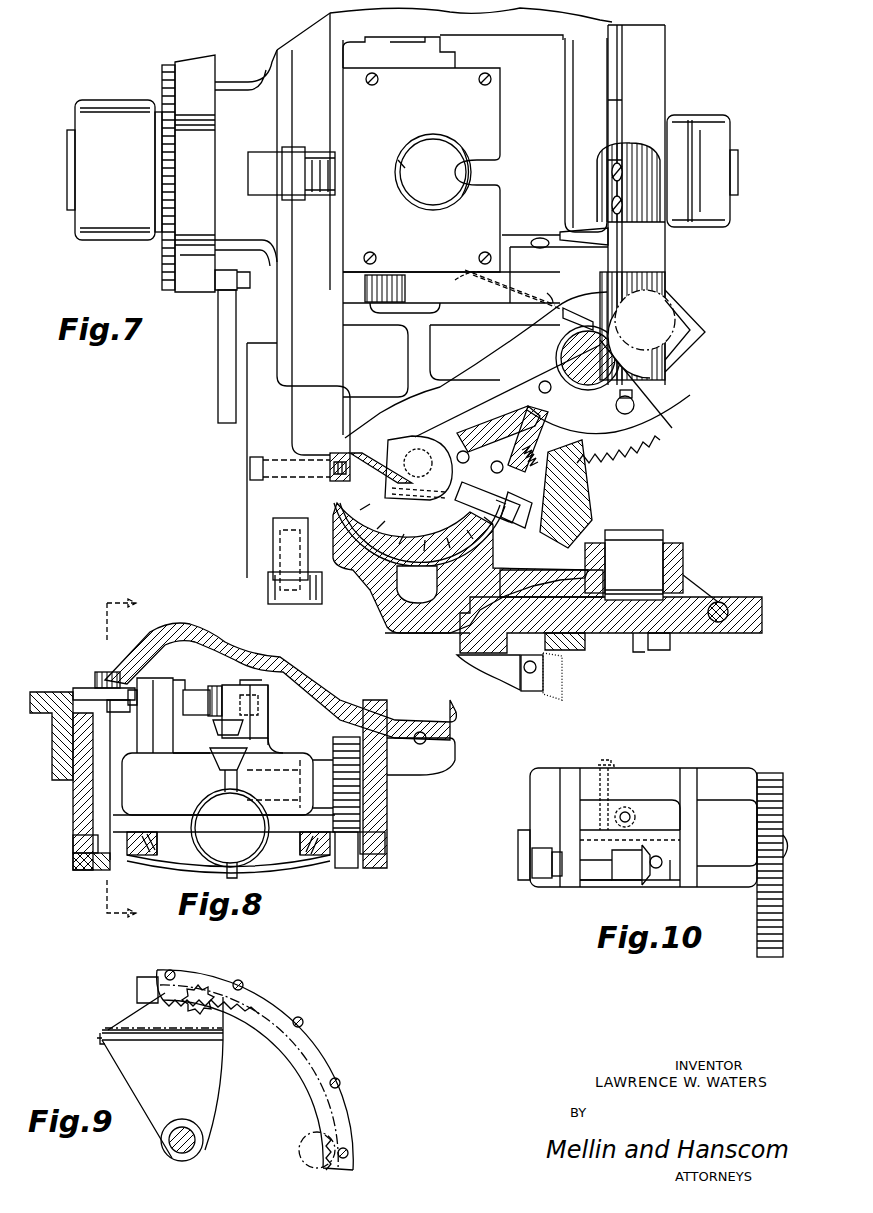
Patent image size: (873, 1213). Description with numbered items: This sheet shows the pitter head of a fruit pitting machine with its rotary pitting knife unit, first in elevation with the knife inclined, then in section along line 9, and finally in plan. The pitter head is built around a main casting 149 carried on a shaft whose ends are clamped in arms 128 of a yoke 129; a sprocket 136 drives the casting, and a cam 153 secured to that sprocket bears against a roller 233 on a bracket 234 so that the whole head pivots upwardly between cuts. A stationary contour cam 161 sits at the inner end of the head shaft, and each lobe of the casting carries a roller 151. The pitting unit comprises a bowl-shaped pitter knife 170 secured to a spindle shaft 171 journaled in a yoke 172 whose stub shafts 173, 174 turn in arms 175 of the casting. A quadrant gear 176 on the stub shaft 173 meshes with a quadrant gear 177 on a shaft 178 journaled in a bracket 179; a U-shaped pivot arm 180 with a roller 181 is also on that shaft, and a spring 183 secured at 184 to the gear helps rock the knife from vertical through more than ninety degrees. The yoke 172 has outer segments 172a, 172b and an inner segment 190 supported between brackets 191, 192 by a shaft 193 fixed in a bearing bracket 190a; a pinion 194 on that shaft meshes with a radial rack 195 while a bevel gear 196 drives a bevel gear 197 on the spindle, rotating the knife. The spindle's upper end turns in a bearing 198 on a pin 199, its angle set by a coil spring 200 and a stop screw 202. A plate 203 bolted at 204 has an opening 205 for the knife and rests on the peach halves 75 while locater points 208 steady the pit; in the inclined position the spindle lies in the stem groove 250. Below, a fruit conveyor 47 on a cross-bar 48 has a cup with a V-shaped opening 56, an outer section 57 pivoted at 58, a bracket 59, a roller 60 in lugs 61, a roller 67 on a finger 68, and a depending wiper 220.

In FIG. 7, the yoke 129 is at (115, 98).
In FIG. 7, the sprocket 136 is at (162, 262).
In FIG. 7, the cam 153 is at (208, 63).
In FIG. 7, the roller 151 is at (292, 148).
In FIG. 7, the roller 233 is at (205, 305).
In FIG. 7, the bracket 234 is at (220, 372).
In FIG. 7, the plate 203 is at (463, 75).
In FIG. 8, the plate 203 is at (290, 878).
In FIG. 7, the bolts 204 is at (372, 86).
In FIG. 8, the bolts 204 is at (152, 858).
In FIG. 7, the opening 205 is at (397, 168).
In FIG. 8, the opening 205 is at (200, 870).
In FIG. 7, the rotary pitter knife 170 is at (400, 180).
In FIG. 8, the rotary pitter knife 170 is at (212, 810).
In FIG. 7, the shaft 178 is at (566, 88).
In FIG. 7, the bracket 179 is at (612, 24).
In FIG. 7, the stationary contour cam 161 is at (660, 68).
In FIG. 7, the roller 181 is at (640, 148).
In FIG. 7, the U-shaped pivot arm 180 is at (630, 218).
In FIG. 7, the arms 128 is at (735, 102).
In FIG. 7, the spring 183 is at (550, 232).
In FIG. 7, the quadrant gear 176 is at (486, 304).
In FIG. 8, the quadrant gear 176 is at (362, 790).
In FIG. 10, the quadrant gear 176 is at (785, 762).
In FIG. 7, the quadrant gear 177 is at (533, 302).
In FIG. 7, the spring attachment point 184 is at (636, 400).
In FIG. 7, the yoke 172 is at (485, 428).
In FIG. 8, the yoke 172 is at (283, 740).
In FIG. 10, the yoke 172 is at (697, 768).
In FIG. 9, the yoke 172 is at (108, 1066).
In FIG. 7, the spindle shaft 171 is at (470, 475).
In FIG. 8, the spindle shaft 171 is at (222, 778).
In FIG. 10, the spindle shaft 171 is at (656, 870).
In FIG. 7, the coil spring 200 is at (540, 455).
In FIG. 10, the coil spring 200 is at (627, 805).
In FIG. 7, the inner segment 190 is at (575, 505).
In FIG. 8, the inner segment 190 is at (250, 684).
In FIG. 10, the inner segment 190 is at (645, 795).
In FIG. 9, the inner segment 190 is at (132, 986).
In FIG. 7, the bevel gear 197 is at (518, 528).
In FIG. 8, the bevel gear 197 is at (214, 720).
In FIG. 7, the stem groove 250 is at (420, 533).
In FIG. 7, the peach halves 75 is at (332, 500).
In FIG. 7, the finger 68 is at (286, 520).
In FIG. 7, the roller 67 is at (320, 588).
In FIG. 7, the V-shaped opening 56 is at (380, 600).
In FIG. 7, the fruit conveyor 47 is at (400, 632).
In FIG. 7, the outer section 57 is at (575, 572).
In FIG. 7, the cross-bar 48 is at (752, 635).
In FIG. 7, the roller 60 is at (640, 532).
In FIG. 7, the lugs 61 is at (594, 542).
In FIG. 7, the pivot 58 is at (718, 600).
In FIG. 7, the bracket 59 is at (633, 652).
In FIG. 7, the wiper 220 is at (500, 678).
In FIG. 8, the section line 9 is at (118, 760).
In FIG. 8, the main casting 149 is at (228, 625).
In FIG. 8, the arms 175 is at (75, 798).
In FIG. 8, the stub shaft 174 is at (73, 850).
In FIG. 10, the stub shaft 174 is at (520, 840).
In FIG. 9, the stub shaft 174 is at (195, 1150).
In FIG. 8, the shaft 193 is at (130, 692).
In FIG. 10, the shaft 193 is at (558, 878).
In FIG. 8, the radial rack 195 is at (108, 672).
In FIG. 9, the radial rack 195 is at (345, 1098).
In FIG. 8, the bracket 191 is at (148, 682).
In FIG. 10, the bracket 191 is at (568, 820).
In FIG. 8, the pinion 194 is at (115, 712).
In FIG. 10, the pinion 194 is at (540, 878).
In FIG. 9, the pinion 194 is at (195, 1002).
In FIG. 8, the outer segment 172b is at (138, 762).
In FIG. 10, the outer segment 172b is at (535, 802).
In FIG. 8, the bearing bracket 190a is at (190, 682).
In FIG. 10, the bearing bracket 190a is at (592, 882).
In FIG. 8, the bevel gear 196 is at (225, 684).
In FIG. 10, the bevel gear 196 is at (640, 884).
In FIG. 8, the bracket 192 is at (268, 686).
In FIG. 10, the bracket 192 is at (690, 820).
In FIG. 8, the bearing 198 is at (262, 680).
In FIG. 10, the bearing 198 is at (670, 878).
In FIG. 8, the pin 199 is at (262, 700).
In FIG. 8, the outer segment 172a is at (298, 740).
In FIG. 10, the outer segment 172a is at (712, 790).
In FIG. 8, the stub shaft 173 is at (382, 850).
In FIG. 8, the locater points 208 is at (236, 880).
In FIG. 10, the stop screw 202 is at (608, 760).
In FIG. 9, the stop screw 202 is at (100, 1044).